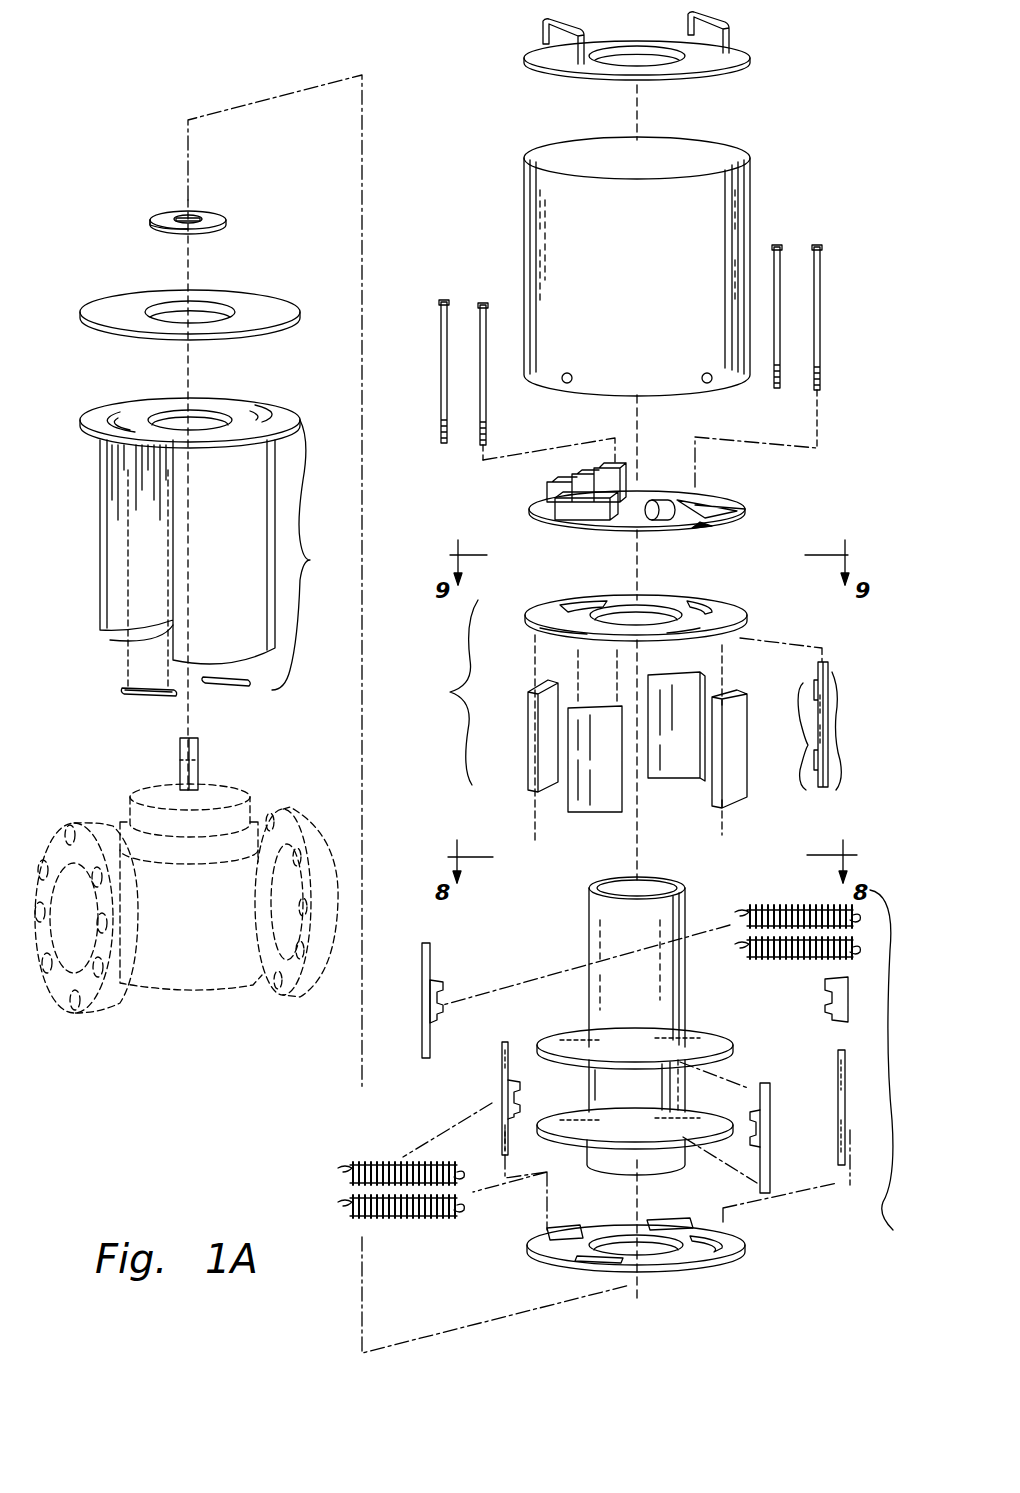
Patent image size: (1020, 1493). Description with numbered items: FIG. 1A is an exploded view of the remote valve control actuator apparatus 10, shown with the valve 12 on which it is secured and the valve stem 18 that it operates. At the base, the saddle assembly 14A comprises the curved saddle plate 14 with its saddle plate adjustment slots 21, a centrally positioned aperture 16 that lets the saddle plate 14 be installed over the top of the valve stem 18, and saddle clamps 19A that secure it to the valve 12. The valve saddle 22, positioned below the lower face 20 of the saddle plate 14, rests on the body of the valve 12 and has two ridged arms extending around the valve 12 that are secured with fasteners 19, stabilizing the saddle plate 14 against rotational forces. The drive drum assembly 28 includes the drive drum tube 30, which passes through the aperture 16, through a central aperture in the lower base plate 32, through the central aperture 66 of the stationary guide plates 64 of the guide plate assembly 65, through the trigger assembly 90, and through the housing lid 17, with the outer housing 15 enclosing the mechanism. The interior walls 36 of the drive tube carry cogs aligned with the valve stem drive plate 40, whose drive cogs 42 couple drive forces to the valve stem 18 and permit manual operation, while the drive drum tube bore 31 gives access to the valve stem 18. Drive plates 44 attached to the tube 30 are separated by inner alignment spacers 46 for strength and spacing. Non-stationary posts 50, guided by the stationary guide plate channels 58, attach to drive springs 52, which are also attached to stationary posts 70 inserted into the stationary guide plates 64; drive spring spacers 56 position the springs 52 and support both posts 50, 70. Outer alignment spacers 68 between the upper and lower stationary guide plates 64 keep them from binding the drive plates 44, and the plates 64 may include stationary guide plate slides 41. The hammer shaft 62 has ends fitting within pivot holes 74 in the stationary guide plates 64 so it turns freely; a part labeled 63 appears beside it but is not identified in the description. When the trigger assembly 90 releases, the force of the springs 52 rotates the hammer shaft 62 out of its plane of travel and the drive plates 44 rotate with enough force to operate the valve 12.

The remote valve control actuator apparatus 10 is at (240, 1112).
The valve 12 is at (128, 805).
The saddle plate 14 is at (205, 517).
The saddle assembly 14A is at (316, 555).
The outer housing 15 is at (752, 172).
The aperture 16 is at (215, 405).
The housing lid 17 is at (745, 48).
The valve stem 18 is at (200, 750).
The fasteners 19 is at (482, 303).
The saddle clamps 19A is at (150, 695).
The lower face 20 is at (130, 455).
The saddle plate adjustment slots 21 is at (260, 412).
The valve saddle 22 is at (190, 632).
The drive drum assembly 28 is at (465, 1100).
The drive drum tube 30 is at (620, 941).
The drive drum tube bore 31 is at (660, 880).
The lower base plate 32 is at (270, 300).
The interior walls 36 is at (622, 882).
The valve stem drive plate 40 is at (200, 215).
The stationary guide plate slides 41 is at (600, 1255).
The drive cogs 42 is at (155, 215).
The drive plates 44 is at (705, 1040).
The inner alignment spacers 46 is at (690, 1095).
The non-stationary posts 50 is at (422, 1032).
The drive springs 52 is at (782, 903).
The drive spring spacers 56 is at (445, 985).
The stationary guide plate channels 58 is at (725, 622).
The hammer shaft 62 is at (827, 726).
The strip notch 63 is at (814, 745).
The stationary guide plates 64 is at (670, 606).
The stationary guide plates assembly 65 is at (443, 692).
The central aperture 66 is at (615, 604).
The outer alignment spacers 68 is at (568, 768).
The stationary posts 70 is at (505, 1040).
The pivot holes 74 is at (745, 625).
The trigger assembly 90 is at (705, 526).